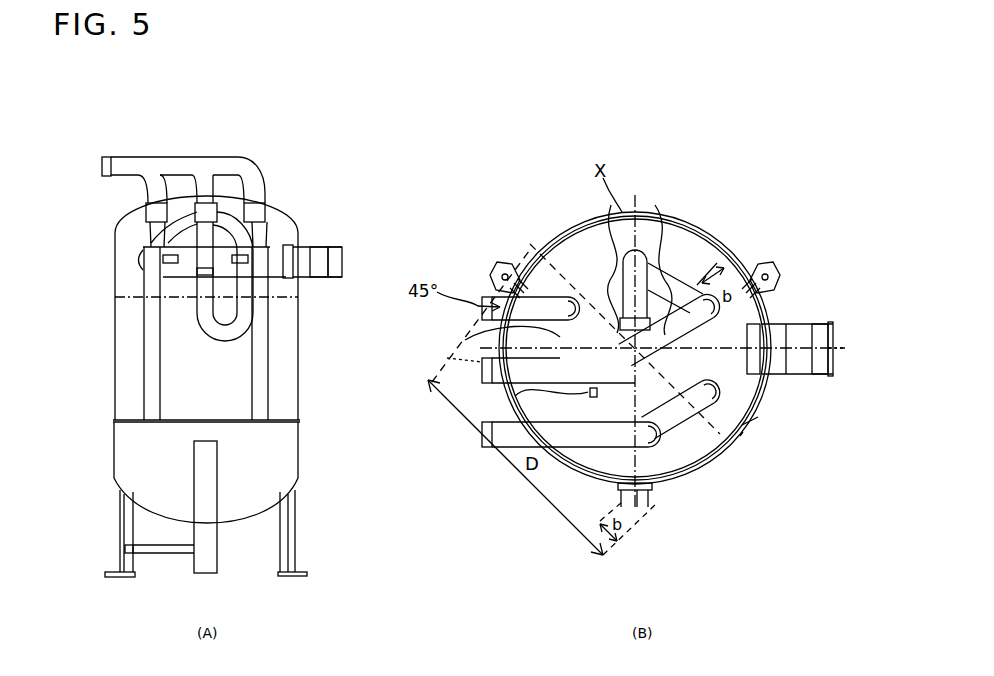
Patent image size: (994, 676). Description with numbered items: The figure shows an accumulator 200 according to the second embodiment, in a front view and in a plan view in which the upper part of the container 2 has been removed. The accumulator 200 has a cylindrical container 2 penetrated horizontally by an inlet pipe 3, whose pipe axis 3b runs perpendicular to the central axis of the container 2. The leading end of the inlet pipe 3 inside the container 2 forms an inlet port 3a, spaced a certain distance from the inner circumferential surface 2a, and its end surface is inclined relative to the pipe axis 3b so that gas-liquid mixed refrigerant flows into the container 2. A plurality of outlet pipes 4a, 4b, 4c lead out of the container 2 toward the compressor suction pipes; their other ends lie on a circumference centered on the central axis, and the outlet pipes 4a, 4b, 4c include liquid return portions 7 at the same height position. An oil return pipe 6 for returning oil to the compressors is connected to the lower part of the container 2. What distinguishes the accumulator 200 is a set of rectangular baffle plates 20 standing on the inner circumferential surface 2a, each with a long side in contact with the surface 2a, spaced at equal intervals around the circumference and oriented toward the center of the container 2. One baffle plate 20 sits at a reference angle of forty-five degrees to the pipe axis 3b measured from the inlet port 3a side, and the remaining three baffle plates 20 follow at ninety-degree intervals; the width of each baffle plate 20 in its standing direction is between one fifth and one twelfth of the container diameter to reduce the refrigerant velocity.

The accumulator 200 is at (290, 129).
The cylindrical container 2 is at (300, 403).
The inner circumferential surface 2a is at (743, 432).
The inlet pipe 3 is at (322, 247).
The inlet port 3a is at (468, 341).
The pipe axis 3b is at (848, 360).
The outlet pipe 4a is at (758, 417).
The outlet pipe 4b is at (662, 235).
The outlet pipe 4c is at (447, 358).
The oil return pipe 6 is at (157, 550).
The liquid return portion 7 is at (240, 249).
The baffle plate 20 is at (153, 350).